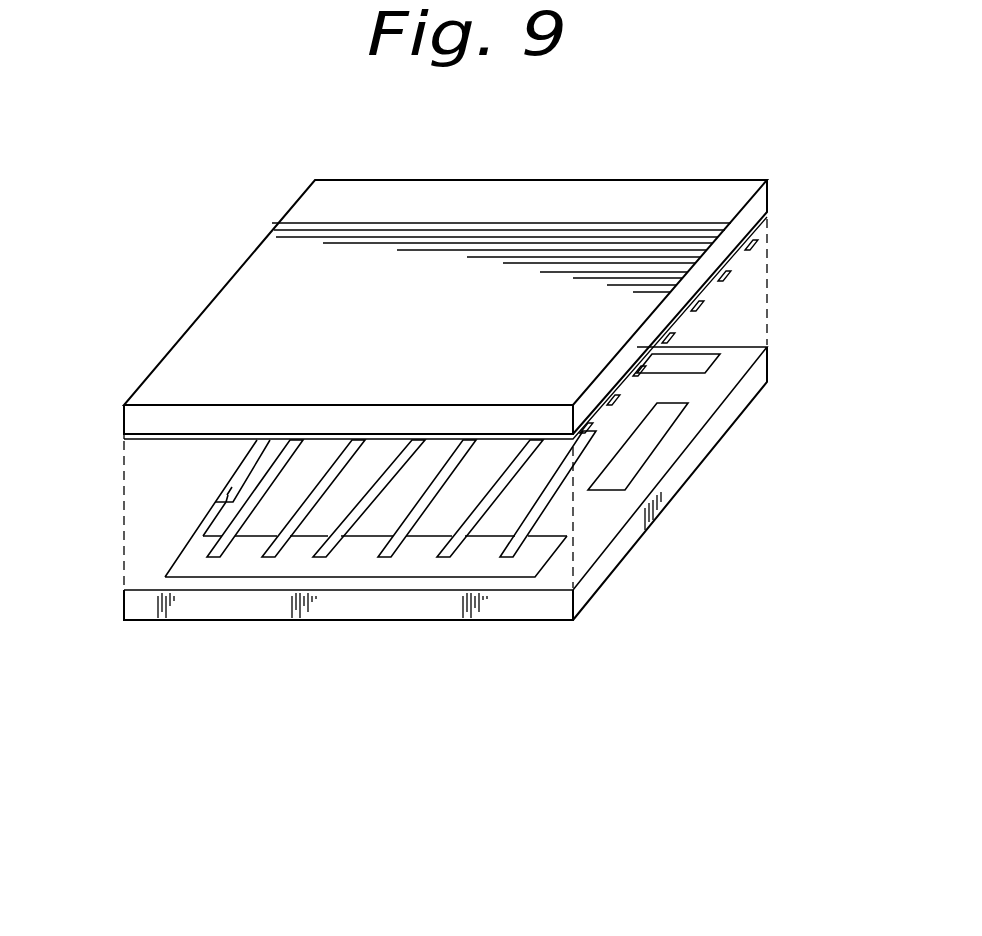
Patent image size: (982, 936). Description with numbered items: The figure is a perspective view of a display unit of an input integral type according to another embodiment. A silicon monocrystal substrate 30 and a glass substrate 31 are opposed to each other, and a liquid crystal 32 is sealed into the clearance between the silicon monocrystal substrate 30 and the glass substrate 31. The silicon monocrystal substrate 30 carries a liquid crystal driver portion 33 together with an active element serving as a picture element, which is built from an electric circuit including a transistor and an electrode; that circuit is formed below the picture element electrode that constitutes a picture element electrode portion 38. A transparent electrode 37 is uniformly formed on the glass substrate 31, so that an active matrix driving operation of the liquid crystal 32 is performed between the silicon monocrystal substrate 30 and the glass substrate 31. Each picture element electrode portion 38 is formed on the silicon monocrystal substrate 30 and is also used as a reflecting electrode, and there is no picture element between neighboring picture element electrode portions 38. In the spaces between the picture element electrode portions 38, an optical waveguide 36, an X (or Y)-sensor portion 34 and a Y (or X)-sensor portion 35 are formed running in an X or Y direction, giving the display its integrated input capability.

The silicon monocrystal substrate 30 is at (767, 368).
The glass substrate 31 is at (745, 192).
The liquid crystal 32 is at (147, 537).
The liquid crystal driver portion 33 is at (232, 487).
The X (or Y)-sensor portion 34 is at (217, 568).
The Y (or X)-sensor portion 35 is at (673, 420).
The optical waveguide 36 is at (502, 557).
The transparent electrode 37 is at (123, 438).
The picture element electrode portion 38 is at (403, 500).